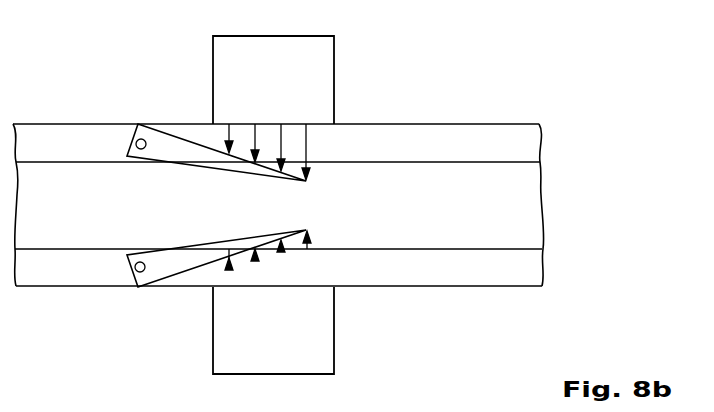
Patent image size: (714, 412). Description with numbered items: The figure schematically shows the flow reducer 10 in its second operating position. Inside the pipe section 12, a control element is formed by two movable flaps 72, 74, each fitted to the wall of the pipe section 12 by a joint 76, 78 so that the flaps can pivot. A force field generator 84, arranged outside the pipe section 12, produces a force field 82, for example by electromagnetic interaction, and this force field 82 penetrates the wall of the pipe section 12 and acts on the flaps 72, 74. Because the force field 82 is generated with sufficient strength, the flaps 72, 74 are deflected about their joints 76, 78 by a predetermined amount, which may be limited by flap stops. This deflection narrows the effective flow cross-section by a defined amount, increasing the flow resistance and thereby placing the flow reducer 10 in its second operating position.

The flow reducer 10 is at (480, 83).
The pipe section 12 is at (522, 202).
The movable flap 72 is at (177, 262).
The movable flap 74 is at (177, 150).
The joint 76 is at (136, 284).
The joint 78 is at (137, 127).
The force field 82 is at (317, 146).
The force field generator 84 is at (323, 73).